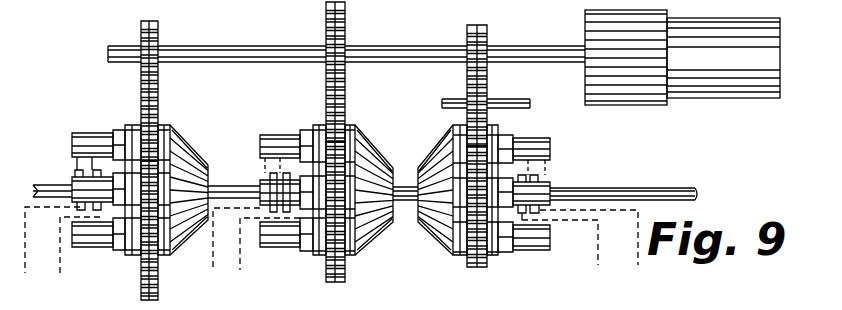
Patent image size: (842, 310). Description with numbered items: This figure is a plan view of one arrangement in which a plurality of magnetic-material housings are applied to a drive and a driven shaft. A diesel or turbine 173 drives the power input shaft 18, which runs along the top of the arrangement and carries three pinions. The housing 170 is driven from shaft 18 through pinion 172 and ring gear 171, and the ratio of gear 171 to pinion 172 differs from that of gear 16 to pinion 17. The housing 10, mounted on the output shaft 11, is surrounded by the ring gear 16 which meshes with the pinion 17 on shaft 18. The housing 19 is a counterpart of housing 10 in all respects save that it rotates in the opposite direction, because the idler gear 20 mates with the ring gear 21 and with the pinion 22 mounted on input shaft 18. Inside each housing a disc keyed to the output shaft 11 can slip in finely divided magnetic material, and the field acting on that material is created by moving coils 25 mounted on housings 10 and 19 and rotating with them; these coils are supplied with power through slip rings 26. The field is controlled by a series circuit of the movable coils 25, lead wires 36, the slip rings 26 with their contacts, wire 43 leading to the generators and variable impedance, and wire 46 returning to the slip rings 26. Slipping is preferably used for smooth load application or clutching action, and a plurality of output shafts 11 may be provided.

The housing 10 is at (366, 146).
The output shaft 11 is at (33, 190).
The ring gear 16 is at (345, 274).
The pinion 17 is at (346, 17).
The power input shaft 18 is at (253, 46).
The housing 19 is at (445, 143).
The idler gear 20 is at (488, 92).
The ring gear 21 is at (476, 267).
The pinion 22 is at (489, 32).
The moving coils 25 is at (80, 133).
The slip rings 26 is at (77, 175).
The lead wires 36 is at (73, 162).
The wire 43 is at (80, 247).
The wire 46 is at (52, 242).
The housing 170 is at (184, 146).
The ring gear 171 is at (158, 289).
The pinion 172 is at (159, 33).
The diesel or turbine 173 is at (714, 98).